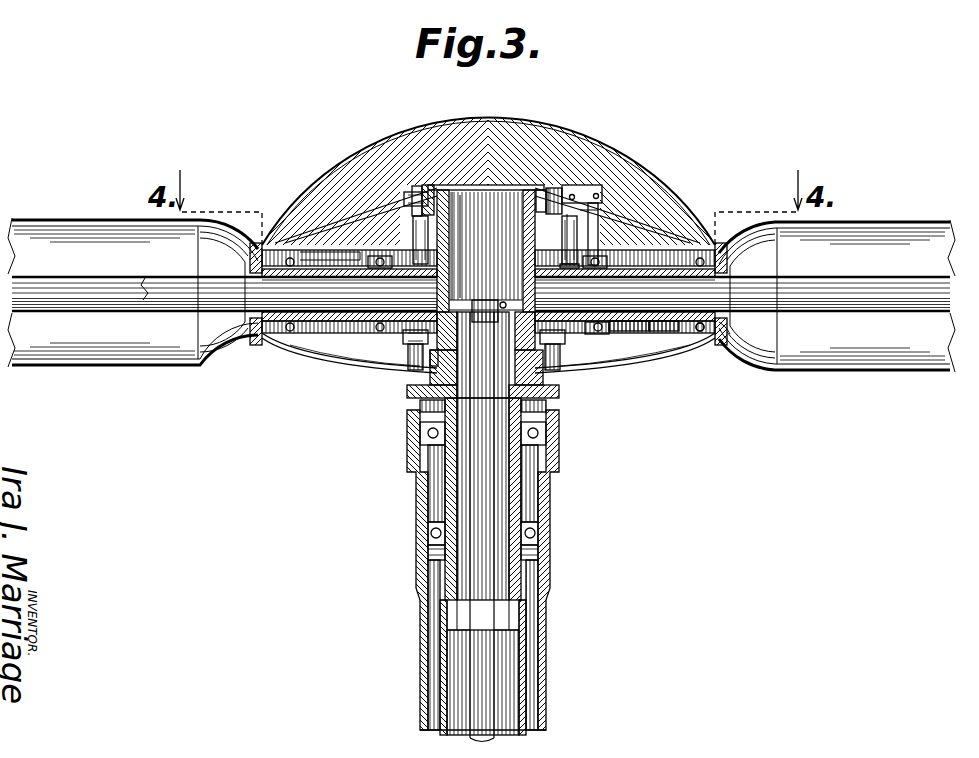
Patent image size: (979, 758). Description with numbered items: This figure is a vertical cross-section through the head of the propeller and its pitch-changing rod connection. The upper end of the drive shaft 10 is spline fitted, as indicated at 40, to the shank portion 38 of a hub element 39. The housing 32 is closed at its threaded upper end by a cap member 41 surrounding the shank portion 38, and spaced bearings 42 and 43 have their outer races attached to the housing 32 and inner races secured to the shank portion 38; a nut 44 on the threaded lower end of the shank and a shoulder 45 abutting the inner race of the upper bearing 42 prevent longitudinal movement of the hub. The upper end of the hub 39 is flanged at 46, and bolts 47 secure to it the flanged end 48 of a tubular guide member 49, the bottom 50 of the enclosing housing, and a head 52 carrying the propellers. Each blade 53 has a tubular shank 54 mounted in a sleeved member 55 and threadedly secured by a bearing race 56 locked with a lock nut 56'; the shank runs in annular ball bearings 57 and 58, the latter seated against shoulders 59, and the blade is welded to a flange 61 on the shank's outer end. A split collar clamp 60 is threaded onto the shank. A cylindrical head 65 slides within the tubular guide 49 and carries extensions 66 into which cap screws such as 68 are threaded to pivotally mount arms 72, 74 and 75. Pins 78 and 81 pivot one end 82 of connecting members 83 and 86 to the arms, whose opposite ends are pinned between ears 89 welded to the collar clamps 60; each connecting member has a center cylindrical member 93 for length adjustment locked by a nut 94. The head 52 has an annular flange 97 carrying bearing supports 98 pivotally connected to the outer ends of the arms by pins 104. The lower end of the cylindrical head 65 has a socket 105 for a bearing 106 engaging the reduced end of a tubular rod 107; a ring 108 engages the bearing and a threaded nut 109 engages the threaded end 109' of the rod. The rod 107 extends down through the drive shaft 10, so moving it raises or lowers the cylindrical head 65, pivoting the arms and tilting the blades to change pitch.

The drive shaft 10 is at (443, 657).
The housing 32 is at (546, 707).
The shank portion 38 is at (520, 497).
The hub element 39 is at (434, 400).
The spline fitting 40 is at (420, 598).
The cap member 41 is at (558, 413).
The upper bearing 42 is at (410, 447).
The lower bearing 43 is at (430, 534).
The nut 44 is at (446, 549).
The shoulder 45 is at (425, 410).
The flange 46 is at (404, 367).
The bolts 47 is at (566, 352).
The flanged end 48 is at (415, 330).
The tubular guide member 49 is at (530, 302).
The housing bottom 50 is at (317, 347).
The head 52 is at (372, 338).
The blades 53 is at (14, 222).
The tubular shanks 54 is at (703, 328).
The sleeved members 55 is at (680, 316).
The threaded bearing races 56 is at (488, 243).
The lock nuts 56' is at (597, 350).
The annular ball bearing 57 is at (260, 244).
The annular ball bearing 58 is at (653, 316).
The shoulders 59 is at (712, 240).
The split collar clamps 60 is at (544, 265).
The flanges 61 is at (733, 322).
The cylindrical head 65 is at (448, 230).
The extensions 66 is at (540, 190).
The cap screw 68 is at (554, 190).
The arm 72 is at (549, 196).
The arm 74 is at (427, 198).
The arm 75 is at (566, 192).
The pin 78 is at (575, 197).
The pin 81 is at (416, 216).
The end of connecting member 82 is at (413, 192).
The connecting member 83 is at (578, 234).
The connecting member 86 is at (454, 250).
The ear 89 is at (437, 293).
The center cylindrical member 93 is at (578, 248).
The nut 94 is at (407, 204).
The annular flange 97 is at (358, 258).
The bearing support 98 is at (598, 206).
The pins 104 is at (598, 198).
The socket 105 is at (459, 304).
The bearing 106 is at (538, 383).
The tubular rod 107 is at (488, 673).
The ring 108 is at (464, 314).
The threaded nut 109 is at (501, 281).
The threaded end 109' is at (415, 372).